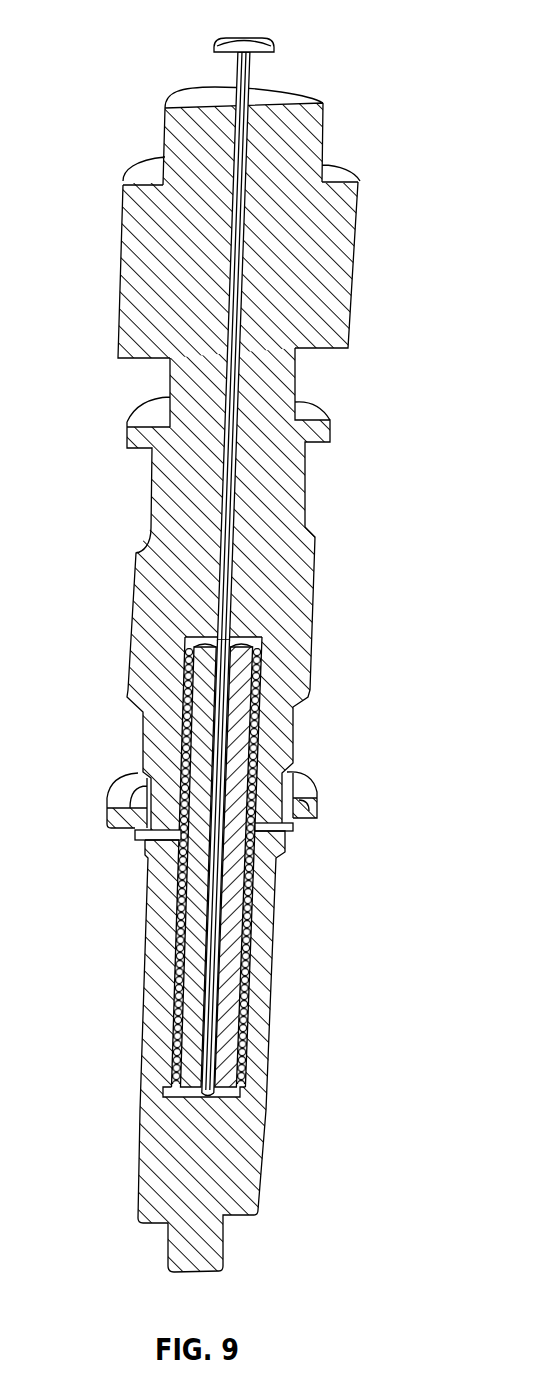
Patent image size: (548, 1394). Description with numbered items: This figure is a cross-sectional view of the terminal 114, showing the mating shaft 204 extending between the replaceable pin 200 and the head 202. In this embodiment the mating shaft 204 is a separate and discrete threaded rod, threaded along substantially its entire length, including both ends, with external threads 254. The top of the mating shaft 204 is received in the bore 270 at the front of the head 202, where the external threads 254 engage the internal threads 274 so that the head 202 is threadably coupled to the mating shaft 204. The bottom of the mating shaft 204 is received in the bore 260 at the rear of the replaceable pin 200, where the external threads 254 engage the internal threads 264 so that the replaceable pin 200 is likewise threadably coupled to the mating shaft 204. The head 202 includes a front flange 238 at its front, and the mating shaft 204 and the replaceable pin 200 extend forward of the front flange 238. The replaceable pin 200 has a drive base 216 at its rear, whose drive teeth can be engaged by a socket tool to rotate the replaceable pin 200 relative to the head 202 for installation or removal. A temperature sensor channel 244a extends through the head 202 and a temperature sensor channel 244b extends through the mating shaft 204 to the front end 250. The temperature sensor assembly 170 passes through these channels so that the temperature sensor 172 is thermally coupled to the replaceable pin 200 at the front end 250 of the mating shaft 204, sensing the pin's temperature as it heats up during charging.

The terminal 114 is at (345, 117).
The temperature sensor assembly 170 is at (289, 46).
The temperature sensor 172 is at (206, 1097).
The replaceable pin 200 is at (247, 1139).
The head 202 is at (291, 484).
The mating shaft 204 is at (226, 955).
The drive base 216 is at (283, 856).
The front flange 238 is at (314, 808).
The temperature sensor channel 244a is at (226, 304).
The temperature sensor channel 244b is at (230, 697).
The front end 250 is at (231, 1100).
The external threads 254 is at (254, 768).
The bore 260 is at (168, 950).
The internal threads 264 is at (238, 1012).
The bore 270 is at (178, 733).
The internal threads 274 is at (248, 752).